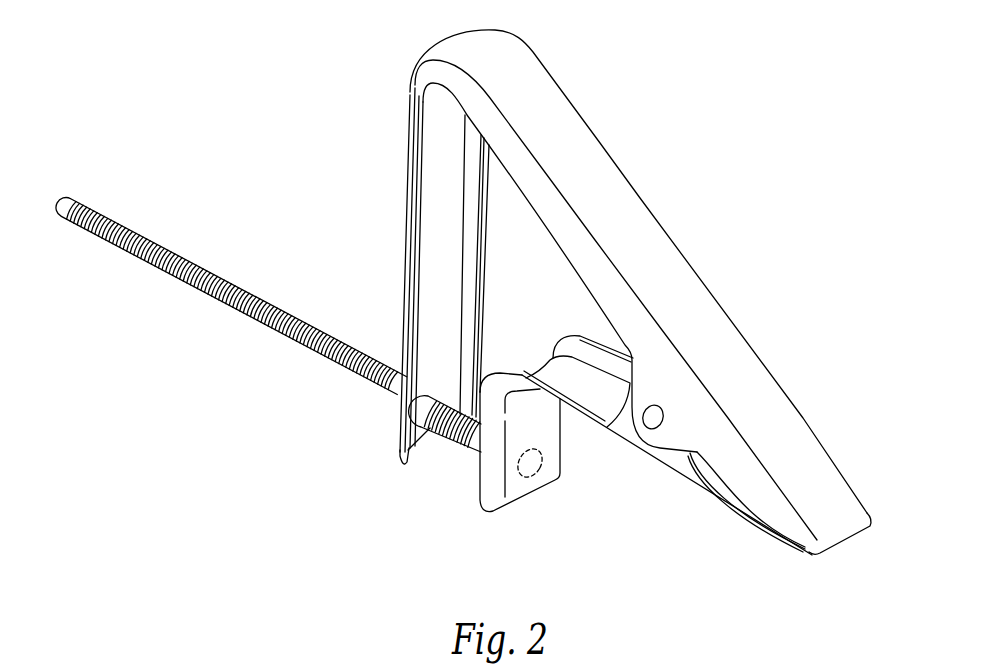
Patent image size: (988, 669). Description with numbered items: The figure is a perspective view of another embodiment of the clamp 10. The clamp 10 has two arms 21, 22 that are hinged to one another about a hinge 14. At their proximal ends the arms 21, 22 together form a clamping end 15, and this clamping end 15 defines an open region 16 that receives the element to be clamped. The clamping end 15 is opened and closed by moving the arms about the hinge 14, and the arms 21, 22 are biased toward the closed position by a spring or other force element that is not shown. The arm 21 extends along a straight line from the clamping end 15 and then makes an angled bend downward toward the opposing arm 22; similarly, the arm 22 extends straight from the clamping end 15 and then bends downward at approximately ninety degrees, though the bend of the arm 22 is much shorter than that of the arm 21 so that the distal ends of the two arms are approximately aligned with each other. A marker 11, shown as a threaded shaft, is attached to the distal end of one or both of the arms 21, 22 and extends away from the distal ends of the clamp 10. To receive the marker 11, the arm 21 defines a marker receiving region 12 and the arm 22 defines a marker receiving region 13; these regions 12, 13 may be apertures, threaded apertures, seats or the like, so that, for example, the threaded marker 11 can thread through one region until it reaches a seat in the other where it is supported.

The clamp 10 is at (655, 248).
The marker 11 is at (148, 277).
The marker receiving region 12 is at (400, 448).
The marker receiving region 13 is at (542, 468).
The hinge 14 is at (655, 408).
The clamping end 15 is at (827, 478).
The open region 16 is at (722, 475).
The arm 21 is at (408, 147).
The arm 22 is at (477, 472).